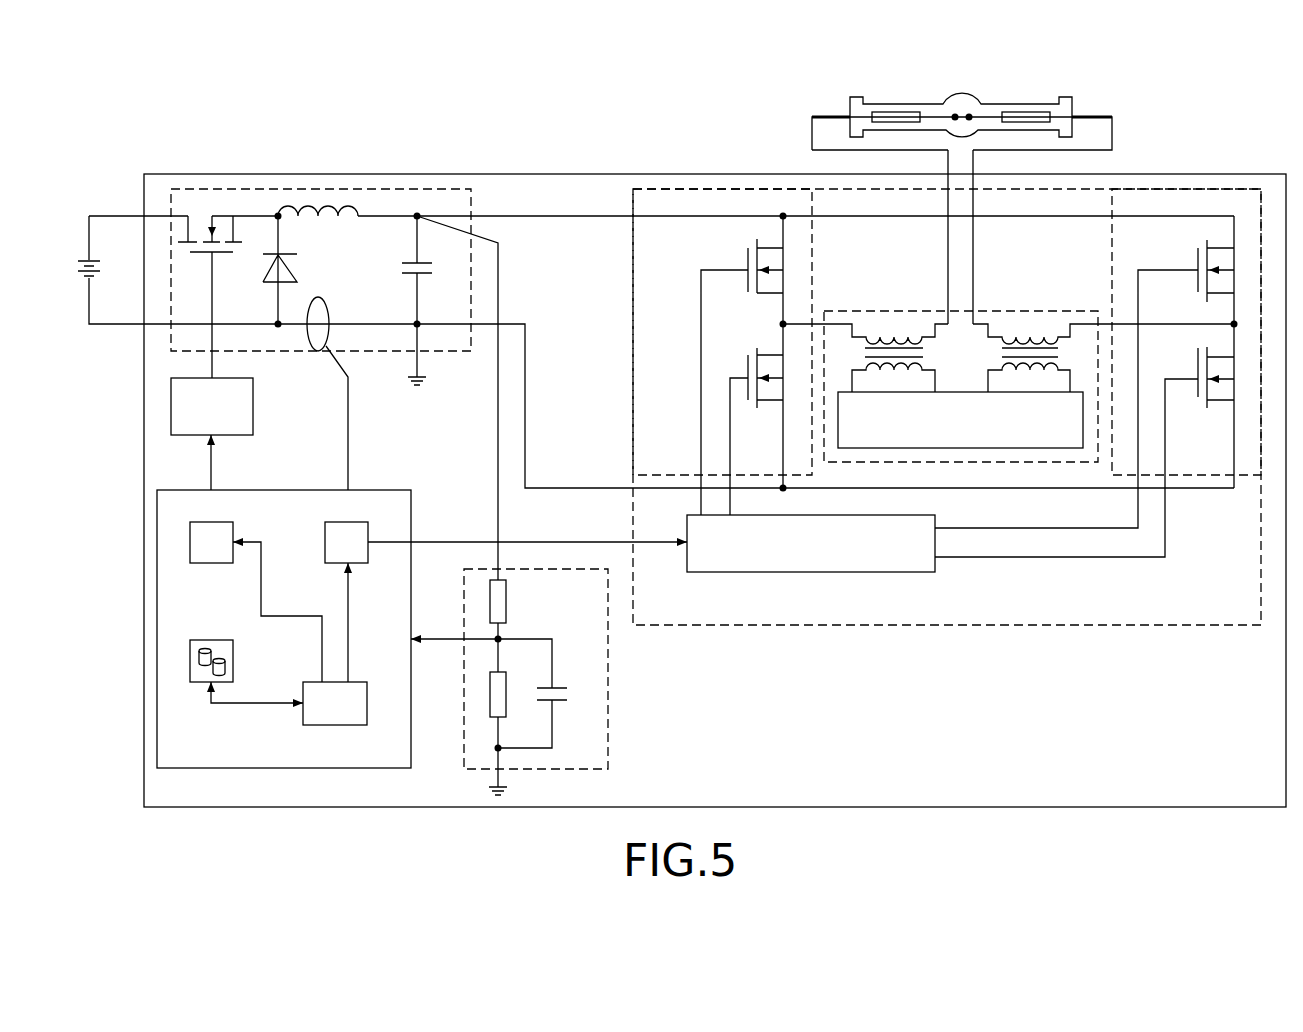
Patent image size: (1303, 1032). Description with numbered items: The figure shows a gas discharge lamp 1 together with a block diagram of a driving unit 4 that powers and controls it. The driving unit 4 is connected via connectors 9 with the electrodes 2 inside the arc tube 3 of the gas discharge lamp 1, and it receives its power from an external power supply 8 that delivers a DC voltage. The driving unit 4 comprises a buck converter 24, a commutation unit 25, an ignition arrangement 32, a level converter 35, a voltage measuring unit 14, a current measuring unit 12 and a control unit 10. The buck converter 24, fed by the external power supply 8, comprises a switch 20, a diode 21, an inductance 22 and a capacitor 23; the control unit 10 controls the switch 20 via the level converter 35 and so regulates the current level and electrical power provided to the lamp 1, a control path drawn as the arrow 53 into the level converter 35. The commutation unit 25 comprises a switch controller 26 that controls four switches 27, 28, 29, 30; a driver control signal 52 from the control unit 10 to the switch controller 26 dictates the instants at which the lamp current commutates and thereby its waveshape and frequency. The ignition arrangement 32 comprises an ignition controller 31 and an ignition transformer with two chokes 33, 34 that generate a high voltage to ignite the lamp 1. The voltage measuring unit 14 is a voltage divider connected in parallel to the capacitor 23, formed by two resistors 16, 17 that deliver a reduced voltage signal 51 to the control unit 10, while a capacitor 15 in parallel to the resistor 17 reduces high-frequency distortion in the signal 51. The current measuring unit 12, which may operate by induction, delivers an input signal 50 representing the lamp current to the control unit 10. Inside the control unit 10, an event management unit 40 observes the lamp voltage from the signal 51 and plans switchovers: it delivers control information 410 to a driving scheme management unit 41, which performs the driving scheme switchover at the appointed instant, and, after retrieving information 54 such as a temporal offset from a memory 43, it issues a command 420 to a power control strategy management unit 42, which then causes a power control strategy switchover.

The gas discharge lamp 1 is at (1078, 100).
The electrodes 2 is at (970, 114).
The arc tube 3 is at (955, 112).
The driving unit 4 is at (590, 174).
The external power supply 8 is at (86, 262).
The connectors 9 is at (946, 196).
The control unit 10 is at (411, 500).
The current measuring unit 12 is at (330, 316).
The voltage measuring unit 14 is at (608, 715).
The capacitor 15 is at (560, 688).
The resistor 16 is at (507, 600).
The resistor 17 is at (490, 696).
The switch 20 is at (190, 228).
The diode 21 is at (268, 272).
The inductance 22 is at (330, 212).
The capacitor 23 is at (405, 264).
The buck converter 24 is at (436, 189).
The commutation unit 25 is at (870, 626).
The switch controller 26 is at (811, 543).
The switch 27 is at (747, 252).
The switch 28 is at (747, 368).
The switch 29 is at (1197, 253).
The switch 30 is at (1197, 362).
The ignition controller 31 is at (960, 420).
The ignition arrangement 32 is at (917, 311).
The choke 33 is at (877, 340).
The choke 34 is at (1035, 340).
The level converter 35 is at (212, 406).
The event management unit 40 is at (335, 703).
The driving scheme management unit 41 is at (346, 542).
The power control strategy management unit 42 is at (211, 542).
The memory 43 is at (233, 660).
The input signal 50 is at (348, 417).
The signal 51 is at (437, 637).
The driver control signal 52 is at (537, 541).
The switch control signal 53 is at (211, 470).
The information 54 is at (265, 708).
The control information 410 is at (349, 612).
The command 420 is at (262, 590).